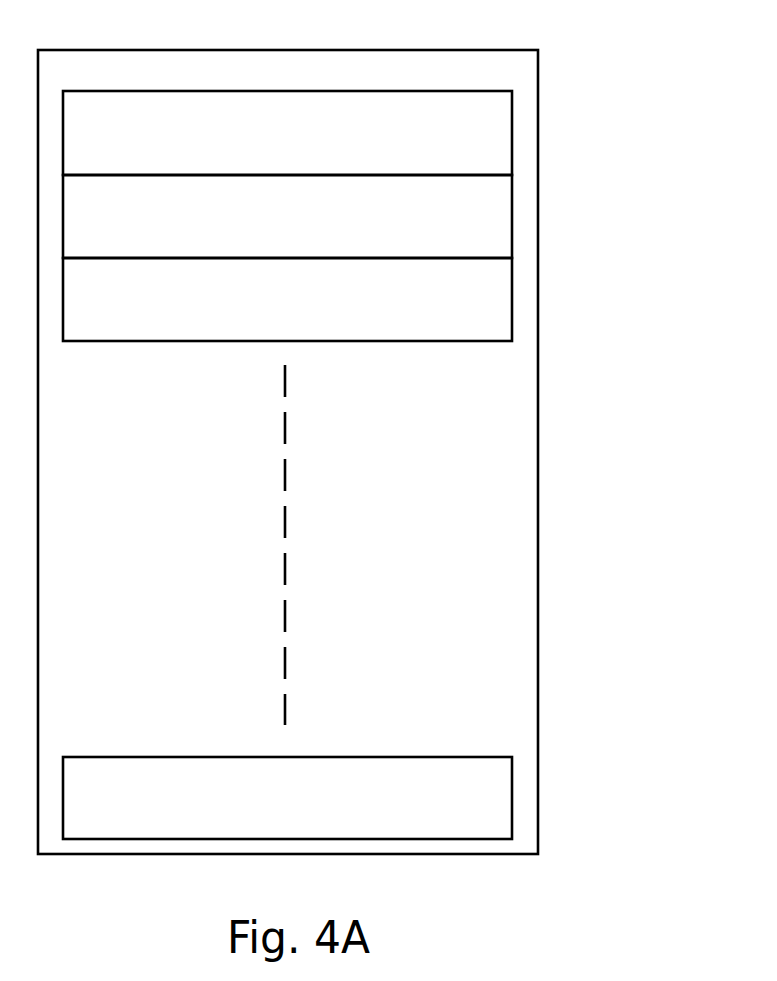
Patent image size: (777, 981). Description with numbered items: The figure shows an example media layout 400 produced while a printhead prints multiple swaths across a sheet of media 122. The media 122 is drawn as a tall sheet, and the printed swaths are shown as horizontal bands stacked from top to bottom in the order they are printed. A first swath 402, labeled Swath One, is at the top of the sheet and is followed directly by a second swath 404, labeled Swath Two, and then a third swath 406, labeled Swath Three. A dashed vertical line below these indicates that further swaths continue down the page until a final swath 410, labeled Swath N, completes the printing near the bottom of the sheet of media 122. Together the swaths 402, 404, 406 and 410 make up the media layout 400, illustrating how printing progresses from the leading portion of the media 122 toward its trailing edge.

The media layout 400 is at (566, 86).
The media 122 is at (538, 408).
The first swath 402 is at (512, 132).
The second swath 404 is at (512, 213).
The third swath 406 is at (512, 298).
The final swath 410 is at (512, 797).